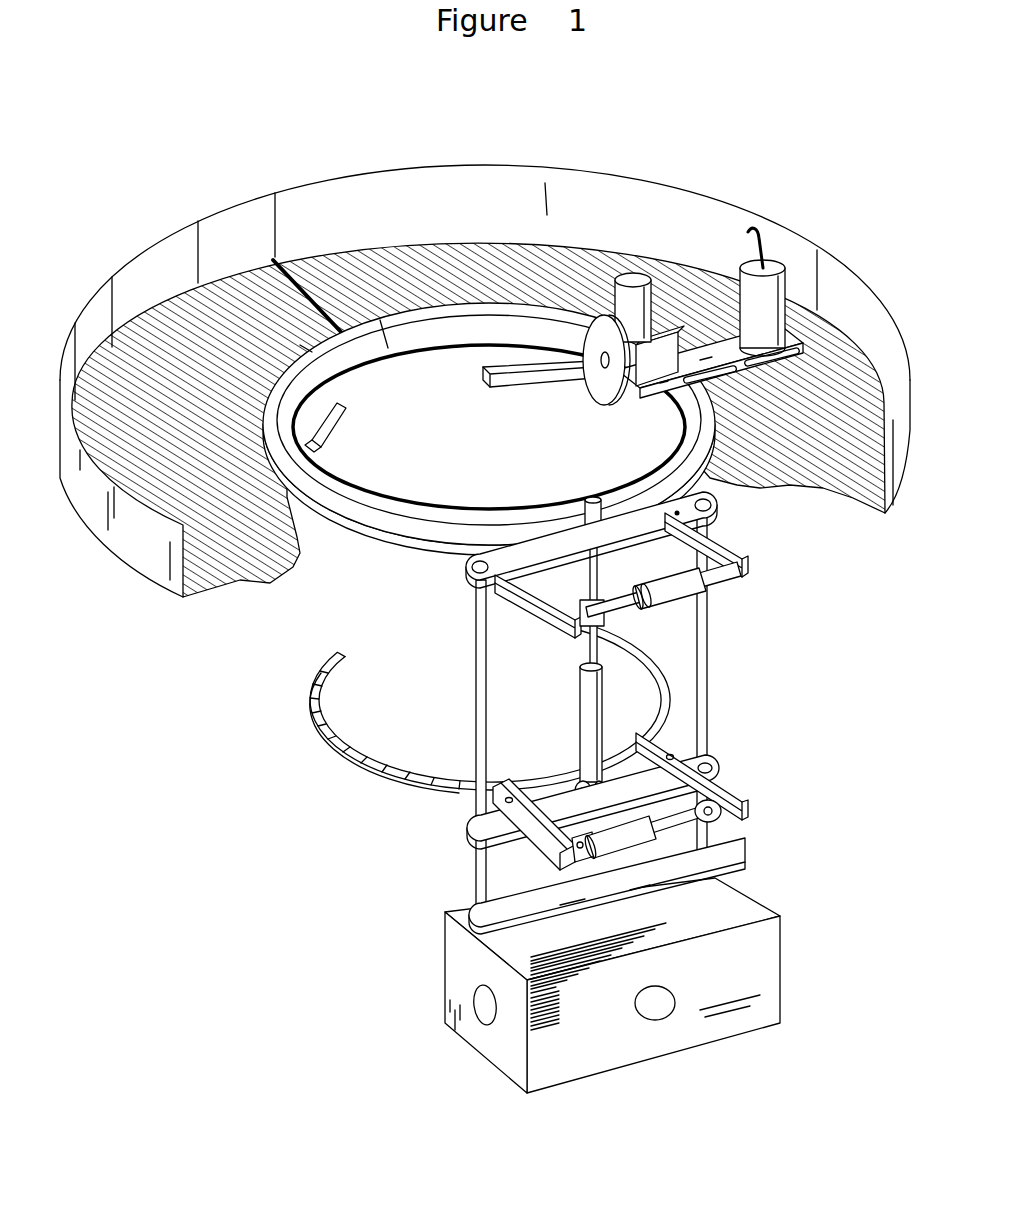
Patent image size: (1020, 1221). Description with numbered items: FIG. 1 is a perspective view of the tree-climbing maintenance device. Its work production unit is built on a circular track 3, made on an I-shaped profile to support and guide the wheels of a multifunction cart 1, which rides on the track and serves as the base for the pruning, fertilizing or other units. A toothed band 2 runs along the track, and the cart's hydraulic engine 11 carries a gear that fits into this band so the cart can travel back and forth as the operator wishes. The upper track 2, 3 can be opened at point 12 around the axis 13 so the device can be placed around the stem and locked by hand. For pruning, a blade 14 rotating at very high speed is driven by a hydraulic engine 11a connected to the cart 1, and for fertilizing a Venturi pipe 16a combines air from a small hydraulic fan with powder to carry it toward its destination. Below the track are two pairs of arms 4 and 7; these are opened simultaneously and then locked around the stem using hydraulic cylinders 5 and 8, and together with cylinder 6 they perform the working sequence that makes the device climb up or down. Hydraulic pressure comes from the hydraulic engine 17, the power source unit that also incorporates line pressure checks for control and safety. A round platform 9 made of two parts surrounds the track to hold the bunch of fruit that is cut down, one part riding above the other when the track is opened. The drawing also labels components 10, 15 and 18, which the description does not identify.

The multifunction cart 1 is at (800, 356).
The toothed band 2 is at (668, 428).
The circular track 3 is at (703, 475).
The pair of arms 4 is at (730, 563).
The cylinder 5 is at (712, 612).
The cylinder 6 is at (597, 700).
The pair of arms 7 is at (743, 798).
The cylinder 8 is at (673, 857).
The round platform 9 is at (237, 567).
The base plate 10 is at (670, 882).
The hydraulic engine 11 is at (633, 283).
The hydraulic engine 11a is at (667, 335).
The point 12 is at (250, 270).
The axis 13 is at (597, 490).
The blade 14 is at (600, 372).
The bowl 15 is at (602, 170).
The Venturi pipe 16a is at (760, 232).
The hydraulic engine 17 is at (770, 975).
The sensor cylinder 18 is at (782, 277).